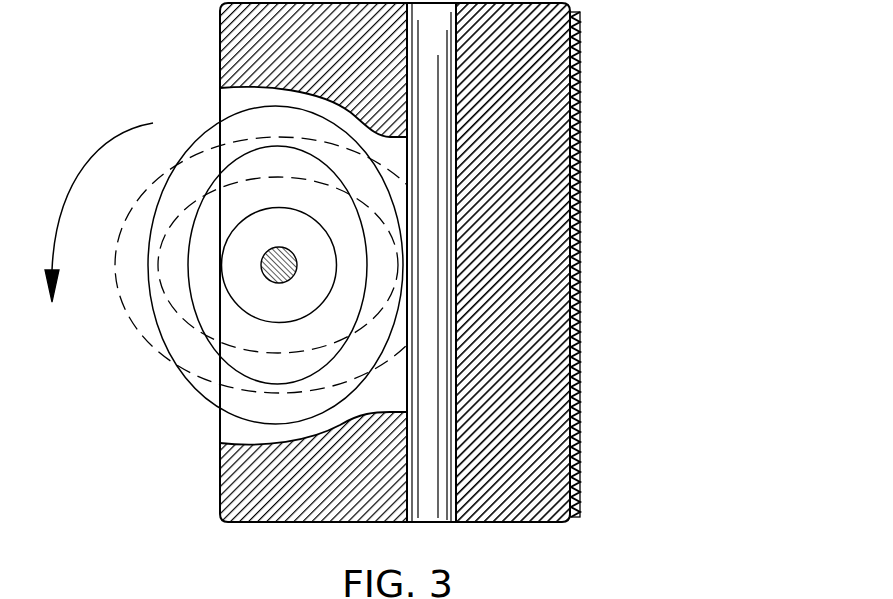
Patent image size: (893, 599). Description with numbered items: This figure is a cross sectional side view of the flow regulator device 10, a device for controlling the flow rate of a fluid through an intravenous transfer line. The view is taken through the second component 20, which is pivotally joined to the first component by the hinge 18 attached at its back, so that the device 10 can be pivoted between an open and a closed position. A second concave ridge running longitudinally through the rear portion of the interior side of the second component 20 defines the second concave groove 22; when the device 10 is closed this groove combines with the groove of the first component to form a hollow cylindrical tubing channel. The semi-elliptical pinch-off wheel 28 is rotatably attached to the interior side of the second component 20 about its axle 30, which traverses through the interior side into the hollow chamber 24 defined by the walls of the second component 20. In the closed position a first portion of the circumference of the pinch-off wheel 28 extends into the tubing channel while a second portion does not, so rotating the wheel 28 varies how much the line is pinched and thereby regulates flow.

The flow regulator device 10 is at (449, 261).
The hinge 18 is at (580, 200).
The second component 20 is at (258, 40).
The second concave groove 22 is at (438, 440).
The hollow chamber 24 is at (248, 98).
The semi-elliptical pinch-off wheel 28 is at (222, 132).
The axle 30 is at (266, 279).